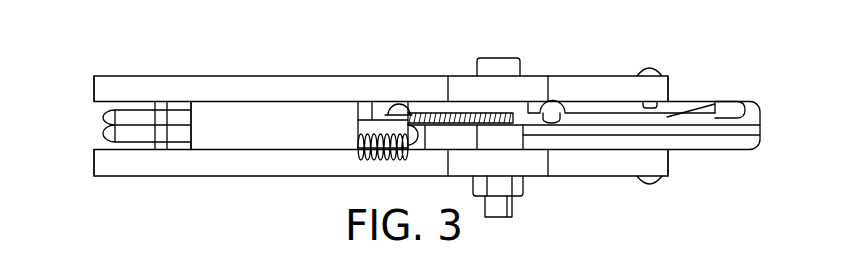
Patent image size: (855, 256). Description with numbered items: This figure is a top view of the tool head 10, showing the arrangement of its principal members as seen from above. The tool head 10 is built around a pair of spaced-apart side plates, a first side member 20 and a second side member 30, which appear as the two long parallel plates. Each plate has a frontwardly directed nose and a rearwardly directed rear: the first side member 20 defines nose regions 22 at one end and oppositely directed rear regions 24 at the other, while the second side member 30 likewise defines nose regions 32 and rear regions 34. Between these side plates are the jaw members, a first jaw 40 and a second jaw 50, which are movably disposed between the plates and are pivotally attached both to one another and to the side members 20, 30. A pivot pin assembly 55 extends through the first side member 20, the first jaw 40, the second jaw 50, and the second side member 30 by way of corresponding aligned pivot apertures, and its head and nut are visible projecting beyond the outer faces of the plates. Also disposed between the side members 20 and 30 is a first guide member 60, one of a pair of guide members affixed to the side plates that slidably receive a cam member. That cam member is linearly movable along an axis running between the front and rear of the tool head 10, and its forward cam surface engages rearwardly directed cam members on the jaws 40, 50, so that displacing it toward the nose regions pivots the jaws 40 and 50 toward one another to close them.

The tool head 10 is at (738, 60).
The first side member 20 is at (168, 177).
The nose regions 22 is at (672, 162).
The rear regions 24 is at (94, 158).
The second side member 30 is at (195, 90).
The nose regions 32 is at (670, 88).
The rear regions 34 is at (94, 84).
The first jaw 40 is at (758, 143).
The second jaw 50 is at (760, 112).
The pivot pin assembly 55 is at (504, 58).
The first guide member 60 is at (288, 122).